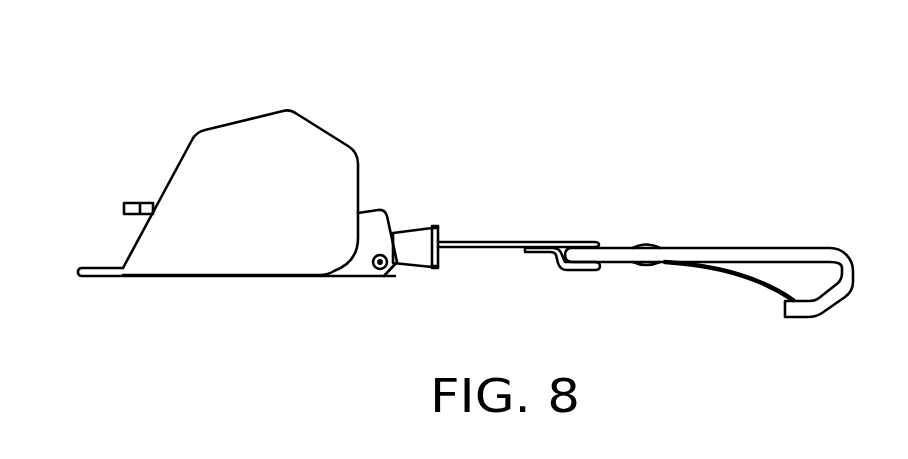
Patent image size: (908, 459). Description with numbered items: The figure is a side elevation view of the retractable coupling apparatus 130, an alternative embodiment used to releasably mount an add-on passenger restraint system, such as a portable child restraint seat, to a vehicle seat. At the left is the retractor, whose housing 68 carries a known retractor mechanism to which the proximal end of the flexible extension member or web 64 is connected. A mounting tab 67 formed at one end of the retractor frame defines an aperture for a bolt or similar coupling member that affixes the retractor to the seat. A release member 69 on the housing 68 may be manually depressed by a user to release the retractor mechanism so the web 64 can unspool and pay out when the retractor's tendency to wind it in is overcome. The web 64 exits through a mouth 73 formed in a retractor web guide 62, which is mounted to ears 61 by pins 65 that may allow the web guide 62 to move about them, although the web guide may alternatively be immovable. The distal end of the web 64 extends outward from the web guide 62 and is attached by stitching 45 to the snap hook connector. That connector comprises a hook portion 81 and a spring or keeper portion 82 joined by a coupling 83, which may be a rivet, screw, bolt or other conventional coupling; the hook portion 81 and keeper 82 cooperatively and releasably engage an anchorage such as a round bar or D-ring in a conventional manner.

The retractable coupling apparatus 130 is at (490, 155).
The housing 68 is at (275, 194).
The release member 69 is at (124, 208).
The mounting tab 67 is at (100, 278).
The ears 61 is at (373, 217).
The pins 65 is at (376, 270).
The retractor web guide 62 is at (412, 237).
The mouth 73 is at (438, 265).
The web 64 is at (490, 242).
The stitching 45 is at (537, 253).
The hook portion 81 is at (842, 298).
The keeper portion 82 is at (733, 278).
The coupling 83 is at (643, 245).